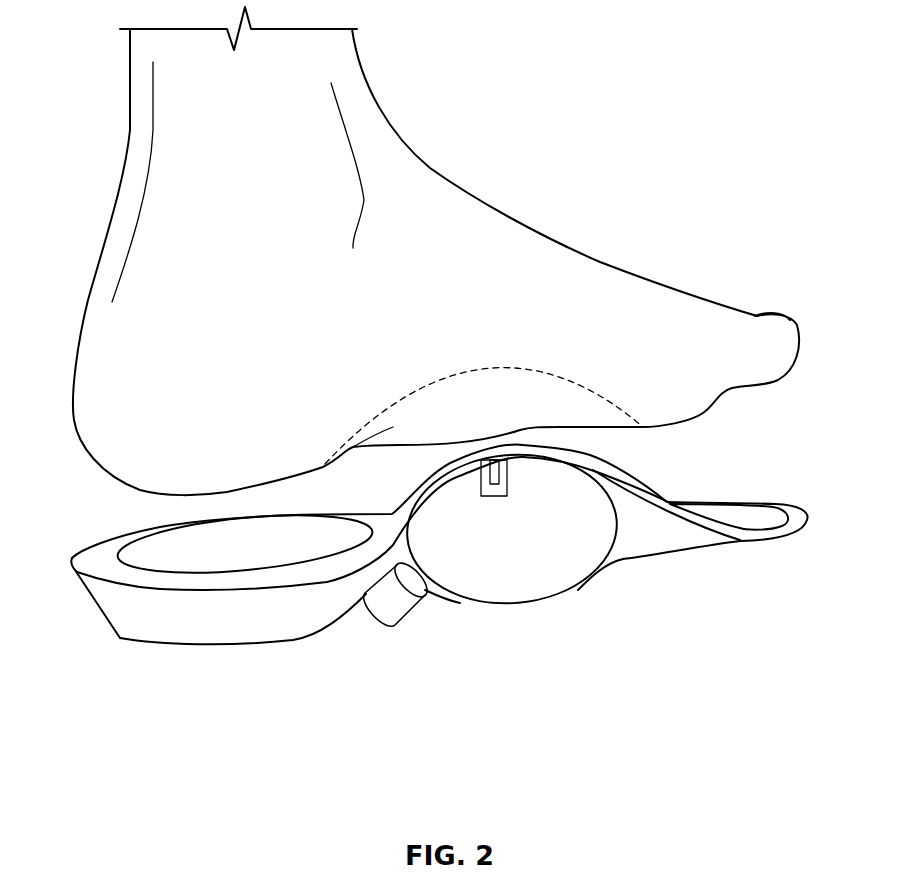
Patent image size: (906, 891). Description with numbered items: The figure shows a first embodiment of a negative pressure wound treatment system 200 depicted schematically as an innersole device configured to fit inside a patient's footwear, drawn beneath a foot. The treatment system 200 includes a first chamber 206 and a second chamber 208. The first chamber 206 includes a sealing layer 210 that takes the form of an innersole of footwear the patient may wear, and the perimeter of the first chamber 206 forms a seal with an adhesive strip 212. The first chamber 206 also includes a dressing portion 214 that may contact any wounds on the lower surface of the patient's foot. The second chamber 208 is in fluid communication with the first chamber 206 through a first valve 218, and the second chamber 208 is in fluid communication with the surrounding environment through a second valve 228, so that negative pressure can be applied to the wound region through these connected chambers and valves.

The negative pressure wound treatment system 200 is at (411, 600).
The first chamber 206 is at (168, 633).
The second chamber 208 is at (500, 592).
The sealing layer 210 is at (98, 600).
The adhesive strip 212 is at (88, 562).
The dressing portion 214 is at (222, 547).
The first valve 218 is at (500, 472).
The second valve 228 is at (397, 610).